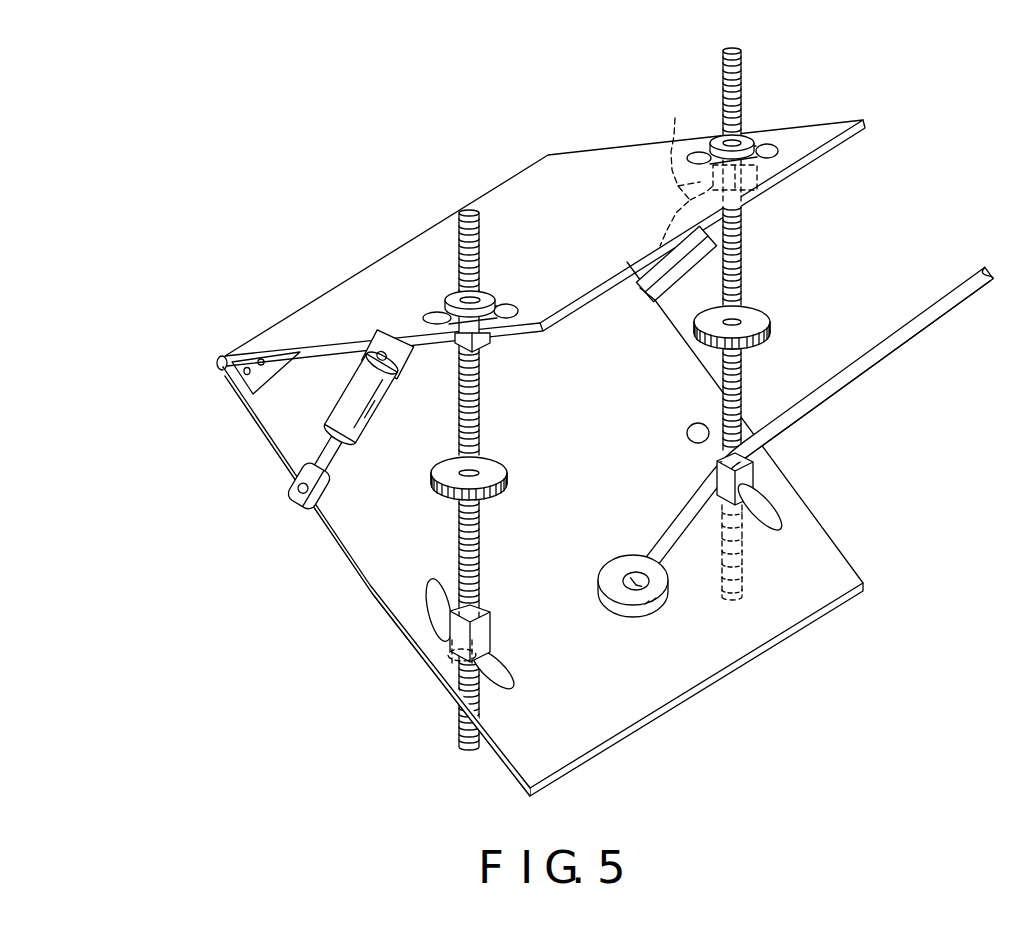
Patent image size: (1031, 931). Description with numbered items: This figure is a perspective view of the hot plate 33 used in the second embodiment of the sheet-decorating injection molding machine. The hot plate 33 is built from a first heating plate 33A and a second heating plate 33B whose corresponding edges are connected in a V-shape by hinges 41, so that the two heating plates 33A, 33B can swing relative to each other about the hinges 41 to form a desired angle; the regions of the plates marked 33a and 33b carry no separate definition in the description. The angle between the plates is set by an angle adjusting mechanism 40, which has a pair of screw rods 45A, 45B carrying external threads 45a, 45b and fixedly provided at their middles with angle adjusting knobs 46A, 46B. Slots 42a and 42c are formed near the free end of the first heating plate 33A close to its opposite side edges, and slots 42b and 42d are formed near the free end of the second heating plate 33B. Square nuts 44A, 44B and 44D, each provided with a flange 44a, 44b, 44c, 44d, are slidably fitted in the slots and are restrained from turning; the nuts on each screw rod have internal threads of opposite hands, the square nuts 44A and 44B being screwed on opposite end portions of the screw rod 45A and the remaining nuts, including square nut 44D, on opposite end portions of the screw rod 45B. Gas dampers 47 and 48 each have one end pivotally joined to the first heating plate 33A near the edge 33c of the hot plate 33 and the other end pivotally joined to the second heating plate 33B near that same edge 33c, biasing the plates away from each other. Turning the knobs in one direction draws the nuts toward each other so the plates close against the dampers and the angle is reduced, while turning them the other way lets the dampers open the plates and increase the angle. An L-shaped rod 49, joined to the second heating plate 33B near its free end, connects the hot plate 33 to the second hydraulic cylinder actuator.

The hot plate 33 is at (834, 530).
The first heating plate 33A is at (609, 163).
The second heating plate 33B is at (663, 677).
The upper surface of plate portion 33a is at (551, 188).
The surface of lower plate portion 33b is at (622, 740).
The edge of the hot plate 33c is at (216, 362).
The angle adjusting mechanism 40 is at (830, 232).
The hinges 41 is at (264, 372).
The slot 42a is at (508, 304).
The slot 42b is at (500, 659).
The slot 42c is at (769, 142).
The slot 42d is at (774, 503).
The square nut 44A is at (492, 338).
The square nut 44B is at (484, 620).
The square nut 44D is at (750, 466).
The flange 44a is at (458, 299).
The flange 44b is at (443, 653).
The flange 44c is at (748, 130).
The flange 44d is at (722, 490).
The screw rod 45A is at (482, 418).
The external thread 45a is at (482, 550).
The screw rod 45B is at (744, 222).
The external thread 45b is at (745, 278).
The angle adjusting knob 46A is at (500, 472).
The angle adjusting knob 46B is at (757, 320).
The gas damper 47 is at (372, 430).
The gas damper 48 is at (676, 196).
The L-shaped rod 49 is at (890, 346).